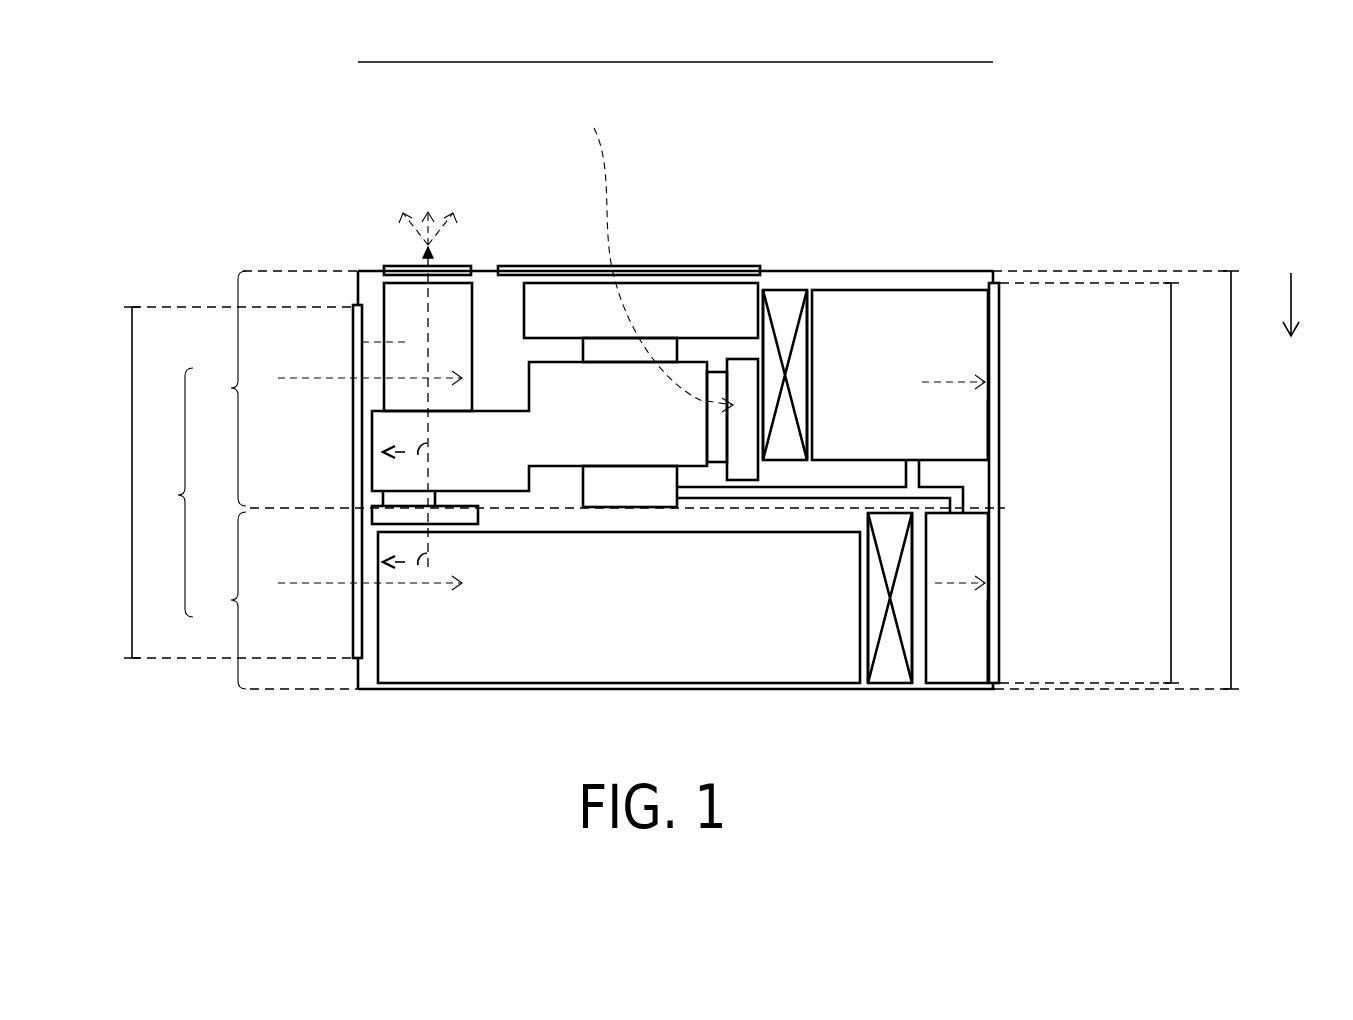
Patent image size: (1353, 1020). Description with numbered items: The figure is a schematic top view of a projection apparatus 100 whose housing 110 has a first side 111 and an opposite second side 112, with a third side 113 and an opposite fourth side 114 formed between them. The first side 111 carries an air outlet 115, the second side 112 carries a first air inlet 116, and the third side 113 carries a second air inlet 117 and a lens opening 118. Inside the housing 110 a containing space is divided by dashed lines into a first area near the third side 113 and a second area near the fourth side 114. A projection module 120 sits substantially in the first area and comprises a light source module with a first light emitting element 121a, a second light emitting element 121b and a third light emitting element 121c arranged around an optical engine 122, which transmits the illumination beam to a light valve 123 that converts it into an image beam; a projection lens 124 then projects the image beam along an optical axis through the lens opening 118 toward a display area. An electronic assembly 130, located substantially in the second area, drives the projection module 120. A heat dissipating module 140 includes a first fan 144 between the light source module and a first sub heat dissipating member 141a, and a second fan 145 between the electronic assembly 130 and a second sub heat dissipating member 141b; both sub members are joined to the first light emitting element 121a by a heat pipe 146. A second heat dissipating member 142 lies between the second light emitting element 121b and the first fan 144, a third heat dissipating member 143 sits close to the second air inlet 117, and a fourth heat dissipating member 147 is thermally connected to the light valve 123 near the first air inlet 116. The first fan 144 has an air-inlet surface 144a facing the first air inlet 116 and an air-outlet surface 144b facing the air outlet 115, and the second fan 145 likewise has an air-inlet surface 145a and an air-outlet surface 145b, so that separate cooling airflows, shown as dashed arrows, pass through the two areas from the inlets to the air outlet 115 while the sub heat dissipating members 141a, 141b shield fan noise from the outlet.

The projection apparatus 100 is at (1160, 749).
The housing 110 is at (917, 270).
The first side 111 is at (1004, 278).
The second side 112 is at (348, 295).
The third side 113 is at (769, 257).
The fourth side 114 is at (818, 698).
The air outlet 115 is at (1000, 359).
The first air inlet 116 is at (347, 362).
The second air inlet 117 is at (587, 262).
The lens opening 118 is at (392, 266).
The projection module 120 is at (506, 337).
The first light emitting element 121a is at (601, 490).
The second light emitting element 121b is at (717, 387).
The third light emitting element 121c is at (597, 350).
The optical engine 122 is at (392, 420).
The light valve 123 is at (372, 512).
The projection lens 124 is at (353, 342).
The electronic assembly 130 is at (768, 670).
The heat dissipating module 140 is at (865, 276).
The first sub heat dissipating member 141a is at (985, 450).
The second sub heat dissipating member 141b is at (978, 630).
The second heat dissipating member 142 is at (745, 416).
The third heat dissipating member 143 is at (720, 292).
The first fan 144 is at (795, 305).
The air-inlet surface 144a is at (764, 306).
The air-outlet surface 144b is at (813, 308).
The second fan 145 is at (892, 672).
The air-inlet surface 145a is at (870, 663).
The air-outlet surface 145b is at (919, 661).
The heat pipe 146 is at (975, 545).
The fourth heat dissipating member 147 is at (383, 500).